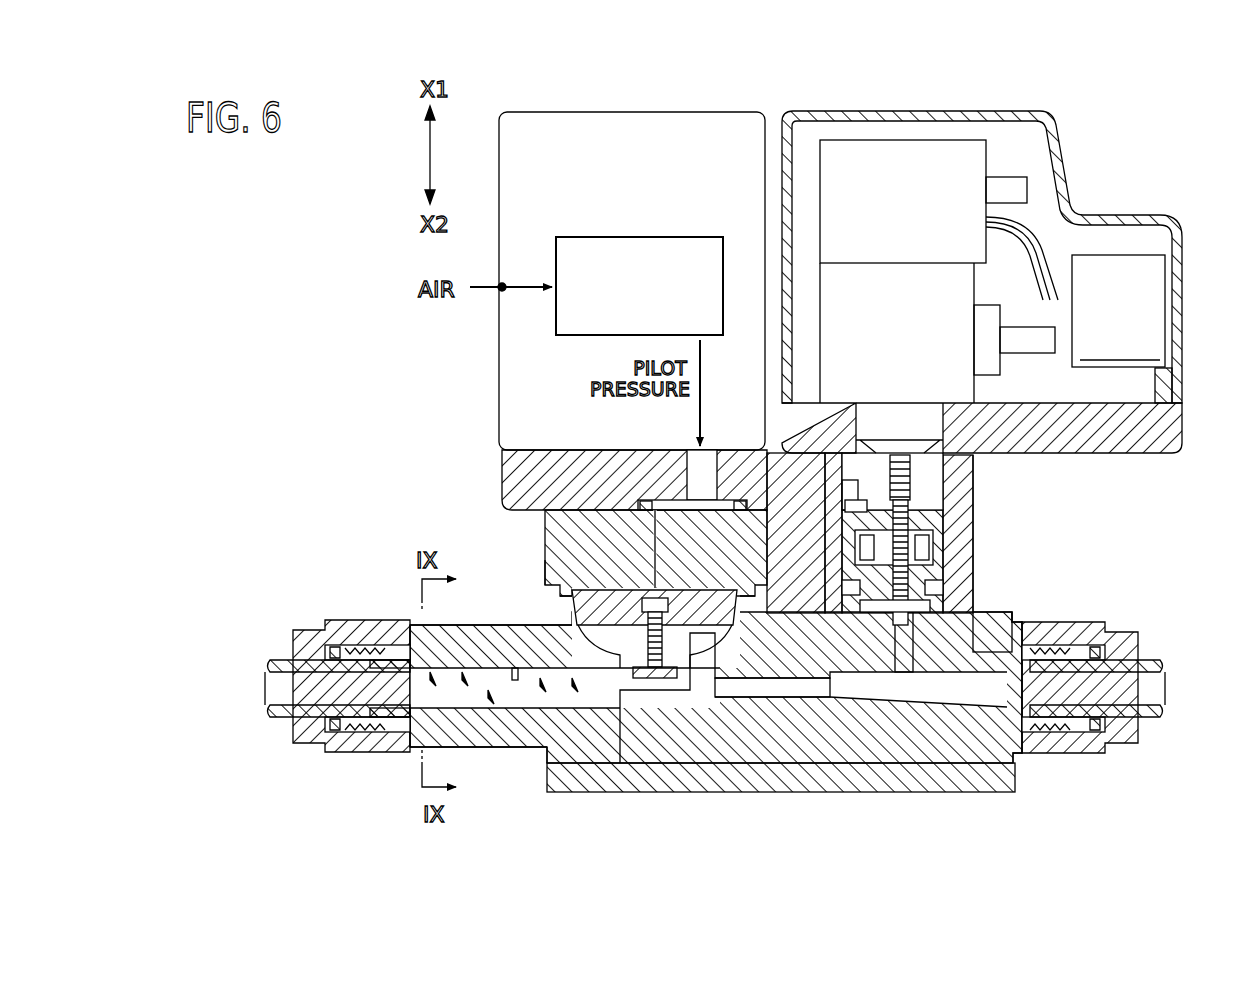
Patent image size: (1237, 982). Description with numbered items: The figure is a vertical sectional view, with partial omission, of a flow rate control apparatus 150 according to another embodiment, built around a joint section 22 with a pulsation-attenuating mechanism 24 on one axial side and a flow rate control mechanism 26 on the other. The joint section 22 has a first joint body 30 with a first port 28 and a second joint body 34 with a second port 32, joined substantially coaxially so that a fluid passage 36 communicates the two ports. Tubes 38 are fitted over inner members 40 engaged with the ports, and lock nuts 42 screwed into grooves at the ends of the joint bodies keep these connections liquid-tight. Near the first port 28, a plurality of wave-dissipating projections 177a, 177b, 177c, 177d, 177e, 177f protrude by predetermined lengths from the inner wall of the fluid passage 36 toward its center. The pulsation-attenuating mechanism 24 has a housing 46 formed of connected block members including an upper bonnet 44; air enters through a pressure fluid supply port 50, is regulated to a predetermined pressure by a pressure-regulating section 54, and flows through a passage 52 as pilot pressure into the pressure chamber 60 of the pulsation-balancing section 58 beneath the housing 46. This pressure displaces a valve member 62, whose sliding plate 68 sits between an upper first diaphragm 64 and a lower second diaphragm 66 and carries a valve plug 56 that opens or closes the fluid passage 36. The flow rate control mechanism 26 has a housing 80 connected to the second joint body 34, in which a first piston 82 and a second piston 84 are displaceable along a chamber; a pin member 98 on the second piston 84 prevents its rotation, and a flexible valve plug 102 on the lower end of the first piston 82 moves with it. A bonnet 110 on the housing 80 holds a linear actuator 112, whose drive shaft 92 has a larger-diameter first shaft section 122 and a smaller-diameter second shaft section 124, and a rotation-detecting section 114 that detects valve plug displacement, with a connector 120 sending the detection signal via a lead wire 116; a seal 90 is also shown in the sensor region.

The joint section 22 is at (418, 747).
The pulsation-attenuating mechanism 24 is at (540, 568).
The flow rate control mechanism 26 is at (976, 548).
The first port 28 is at (392, 717).
The first joint body 30 is at (575, 763).
The second port 32 is at (1012, 740).
The second joint body 34 is at (972, 792).
The fluid passage 36 is at (773, 693).
The tube 38 is at (283, 717).
The inner member 40 is at (340, 740).
The lock nut 42 is at (305, 752).
The bonnet 44 is at (627, 111).
The housing 46 is at (520, 488).
The pressure fluid supply port 50 is at (502, 291).
The passage 52 is at (657, 537).
The pressure-regulating section 54 is at (688, 237).
The valve plug 56 is at (656, 690).
The pulsation-balancing section 58 is at (700, 583).
The pressure chamber 60 is at (612, 585).
The valve member 62 is at (705, 690).
The first diaphragm 64 is at (575, 588).
The second diaphragm 66 is at (634, 686).
The sliding plate 68 is at (578, 600).
The housing 80 is at (957, 490).
The first piston 82 is at (975, 592).
The second piston 84 is at (975, 516).
The seal 90 is at (852, 600).
The drive shaft 92 is at (945, 470).
The pin member 98 is at (850, 512).
The valve plug 102 is at (903, 700).
The bonnet 110 is at (1000, 111).
The linear actuator 112 is at (977, 288).
The rotation-detecting section 114 is at (977, 158).
The lead wire 116 is at (1042, 240).
The connector 120 is at (1113, 268).
The first shaft section 122 is at (882, 476).
The second shaft section 124 is at (937, 557).
The flow rate control apparatus 150 is at (1118, 101).
The wave-dissipating projection 177a is at (432, 672).
The wave-dissipating projection 177b is at (463, 672).
The wave-dissipating projection 177c is at (490, 708).
The wave-dissipating projection 177d is at (513, 708).
The wave-dissipating projection 177e is at (543, 708).
The wave-dissipating projection 177f is at (576, 708).